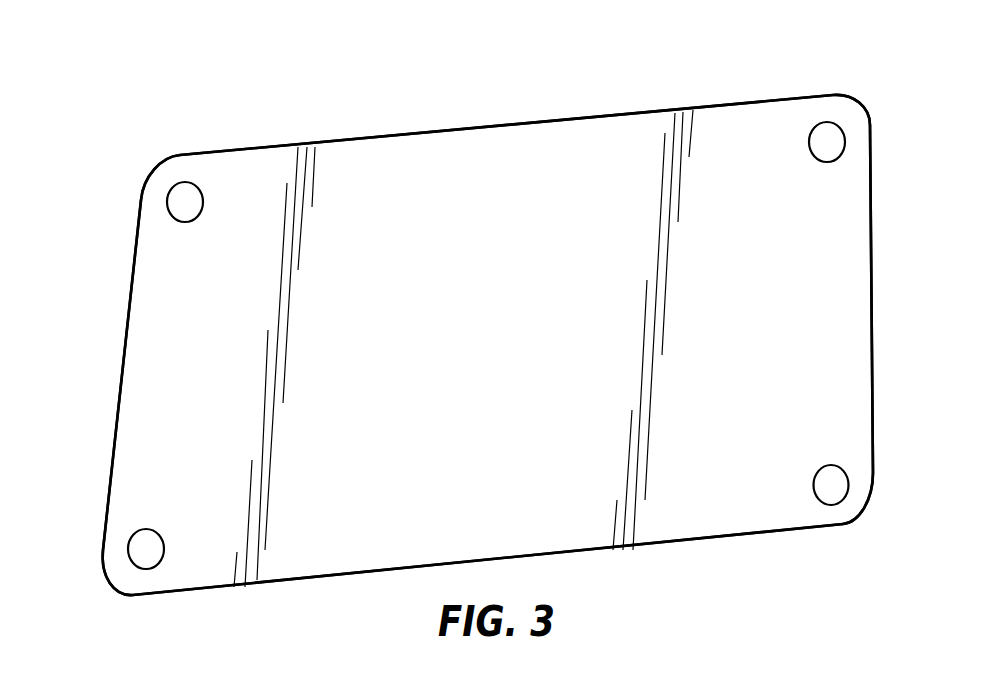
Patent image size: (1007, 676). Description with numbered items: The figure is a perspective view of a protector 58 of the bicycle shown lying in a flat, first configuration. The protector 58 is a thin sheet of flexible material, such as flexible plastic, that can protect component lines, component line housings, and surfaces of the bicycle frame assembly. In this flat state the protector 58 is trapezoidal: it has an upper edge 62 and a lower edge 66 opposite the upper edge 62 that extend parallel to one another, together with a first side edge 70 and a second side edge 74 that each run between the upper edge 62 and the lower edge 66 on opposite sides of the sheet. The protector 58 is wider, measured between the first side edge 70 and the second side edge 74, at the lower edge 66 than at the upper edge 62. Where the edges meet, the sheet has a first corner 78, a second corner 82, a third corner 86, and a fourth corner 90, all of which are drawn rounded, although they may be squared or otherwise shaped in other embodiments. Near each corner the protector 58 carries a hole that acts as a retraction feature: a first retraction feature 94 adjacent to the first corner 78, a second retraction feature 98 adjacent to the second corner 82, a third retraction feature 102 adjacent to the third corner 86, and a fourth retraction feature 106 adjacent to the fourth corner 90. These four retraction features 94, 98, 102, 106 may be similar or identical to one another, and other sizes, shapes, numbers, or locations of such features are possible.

The protector 58 is at (100, 192).
The upper edge 62 is at (557, 120).
The lower edge 66 is at (597, 555).
The first side edge 70 is at (120, 365).
The second side edge 74 is at (872, 198).
The first corner 78 is at (163, 160).
The second corner 82 is at (855, 100).
The third corner 86 is at (860, 517).
The fourth corner 90 is at (113, 590).
The first retraction feature 94 is at (190, 197).
The second retraction feature 98 is at (823, 138).
The third retraction feature 102 is at (837, 480).
The fourth retraction feature 106 is at (142, 548).